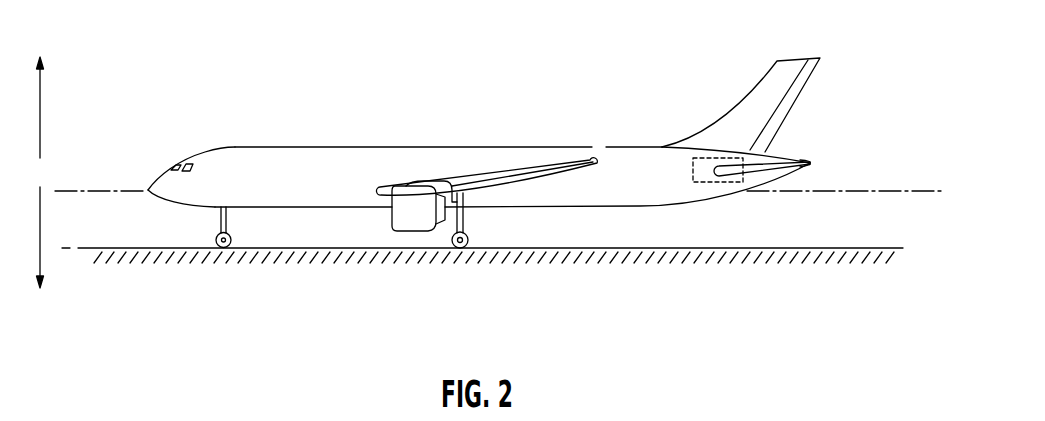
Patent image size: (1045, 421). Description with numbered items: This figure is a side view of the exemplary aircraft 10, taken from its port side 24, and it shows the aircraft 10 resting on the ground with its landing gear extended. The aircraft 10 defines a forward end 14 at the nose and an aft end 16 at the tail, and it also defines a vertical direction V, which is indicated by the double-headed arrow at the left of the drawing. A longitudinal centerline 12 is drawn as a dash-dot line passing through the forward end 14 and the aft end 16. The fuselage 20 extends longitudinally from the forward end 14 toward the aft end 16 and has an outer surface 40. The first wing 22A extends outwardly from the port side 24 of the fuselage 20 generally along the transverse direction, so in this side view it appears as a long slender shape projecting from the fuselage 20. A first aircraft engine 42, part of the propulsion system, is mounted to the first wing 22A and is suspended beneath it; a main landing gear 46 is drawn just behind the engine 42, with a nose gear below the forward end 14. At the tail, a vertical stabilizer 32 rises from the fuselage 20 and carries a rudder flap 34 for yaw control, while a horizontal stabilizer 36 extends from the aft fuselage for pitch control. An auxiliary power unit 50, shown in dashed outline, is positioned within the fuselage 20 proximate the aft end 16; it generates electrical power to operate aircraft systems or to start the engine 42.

The aircraft 10 is at (198, 92).
The longitudinal axis / centerline 12 is at (96, 189).
The forward end 14 is at (153, 202).
The aft end 16 is at (828, 163).
The fuselage 20 is at (469, 198).
The first wing 22A is at (542, 174).
The port side 24 is at (573, 207).
The vertical stabilizer 32 is at (772, 92).
The rudder flap 34 is at (800, 88).
The horizontal stabilizer 36 is at (757, 175).
The outer surface 40 is at (397, 136).
The first aircraft engine 42 is at (400, 236).
The landing gear 46 is at (455, 244).
The auxiliary power unit 50 is at (707, 157).
The vertical direction V is at (40, 172).